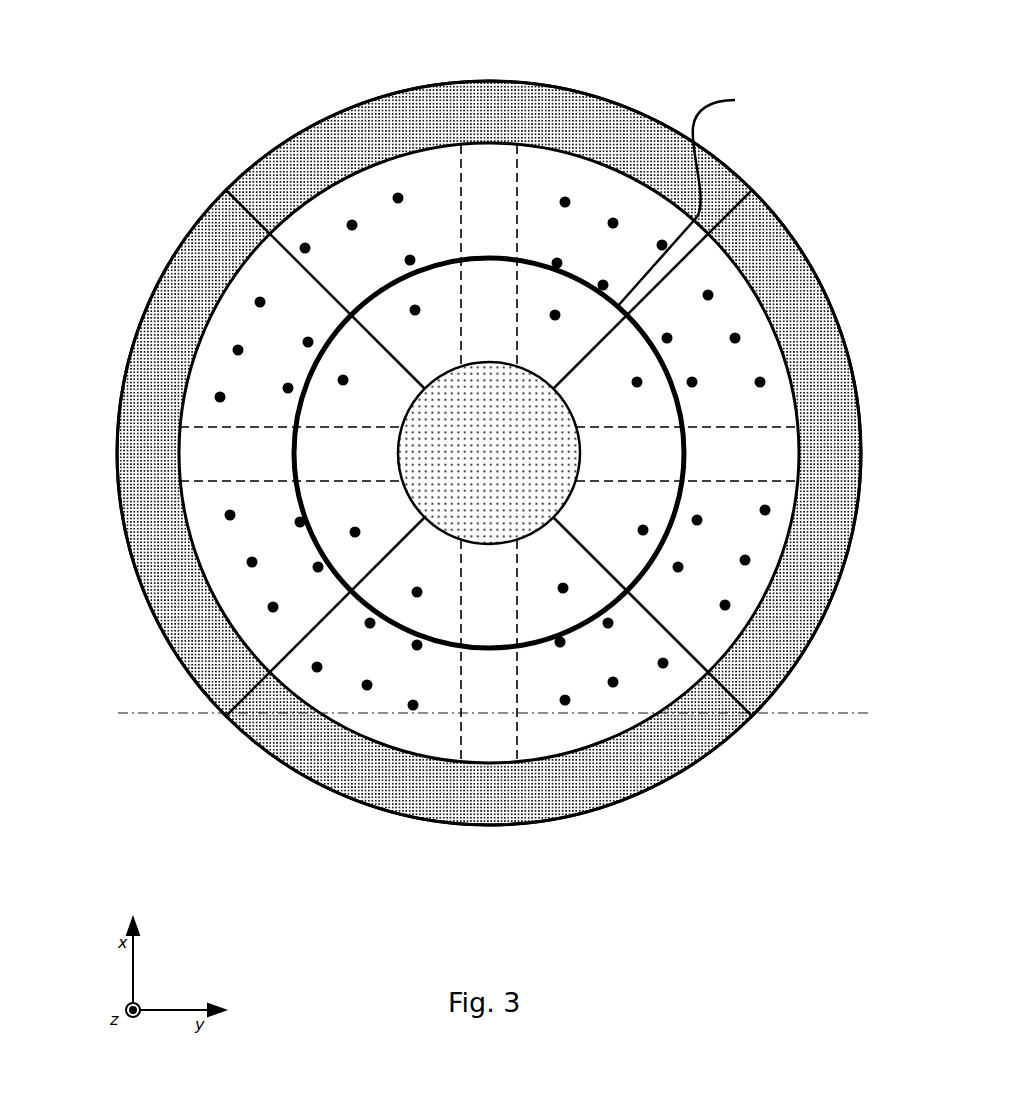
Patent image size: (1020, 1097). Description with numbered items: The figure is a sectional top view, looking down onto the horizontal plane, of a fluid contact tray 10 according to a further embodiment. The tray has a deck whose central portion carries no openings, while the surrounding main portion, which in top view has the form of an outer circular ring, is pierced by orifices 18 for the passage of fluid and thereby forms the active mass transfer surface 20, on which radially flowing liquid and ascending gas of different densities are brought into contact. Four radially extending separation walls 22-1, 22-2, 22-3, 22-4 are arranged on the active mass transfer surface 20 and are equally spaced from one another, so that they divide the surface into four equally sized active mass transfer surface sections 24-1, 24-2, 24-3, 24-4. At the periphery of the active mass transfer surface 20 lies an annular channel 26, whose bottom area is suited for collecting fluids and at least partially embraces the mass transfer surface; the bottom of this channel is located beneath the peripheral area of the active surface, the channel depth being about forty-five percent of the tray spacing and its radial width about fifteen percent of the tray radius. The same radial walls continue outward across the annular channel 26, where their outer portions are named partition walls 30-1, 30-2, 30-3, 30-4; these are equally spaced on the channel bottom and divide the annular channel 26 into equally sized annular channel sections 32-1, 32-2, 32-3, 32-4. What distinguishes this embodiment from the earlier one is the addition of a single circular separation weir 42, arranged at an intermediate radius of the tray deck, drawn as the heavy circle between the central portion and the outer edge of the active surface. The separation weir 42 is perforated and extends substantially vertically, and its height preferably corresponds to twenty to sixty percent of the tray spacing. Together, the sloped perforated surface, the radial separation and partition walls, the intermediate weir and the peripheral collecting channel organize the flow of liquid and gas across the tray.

The fluid contact tray 10 is at (257, 95).
The orifices 18 is at (260, 298).
The active mass transfer surface 20 is at (428, 186).
The separation wall 22-1 is at (700, 258).
The separation wall 22-2 is at (700, 658).
The separation wall 22-3 is at (288, 654).
The separation wall 22-4 is at (290, 250).
The active mass transfer surface section 24-1 is at (738, 358).
The active mass transfer surface section 24-2 is at (600, 720).
The active mass transfer surface section 24-3 is at (217, 543).
The active mass transfer surface section 24-4 is at (219, 392).
The annular channel 26 is at (157, 363).
The partition wall 30-1 is at (747, 207).
The partition wall 30-2 is at (747, 704).
The partition wall 30-3 is at (250, 697).
The partition wall 30-4 is at (228, 205).
The annular channel section 32-1 is at (806, 623).
The annular channel section 32-2 is at (570, 796).
The annular channel section 32-3 is at (175, 624).
The annular channel section 32-4 is at (545, 112).
The circular separation weir 42 is at (712, 192).